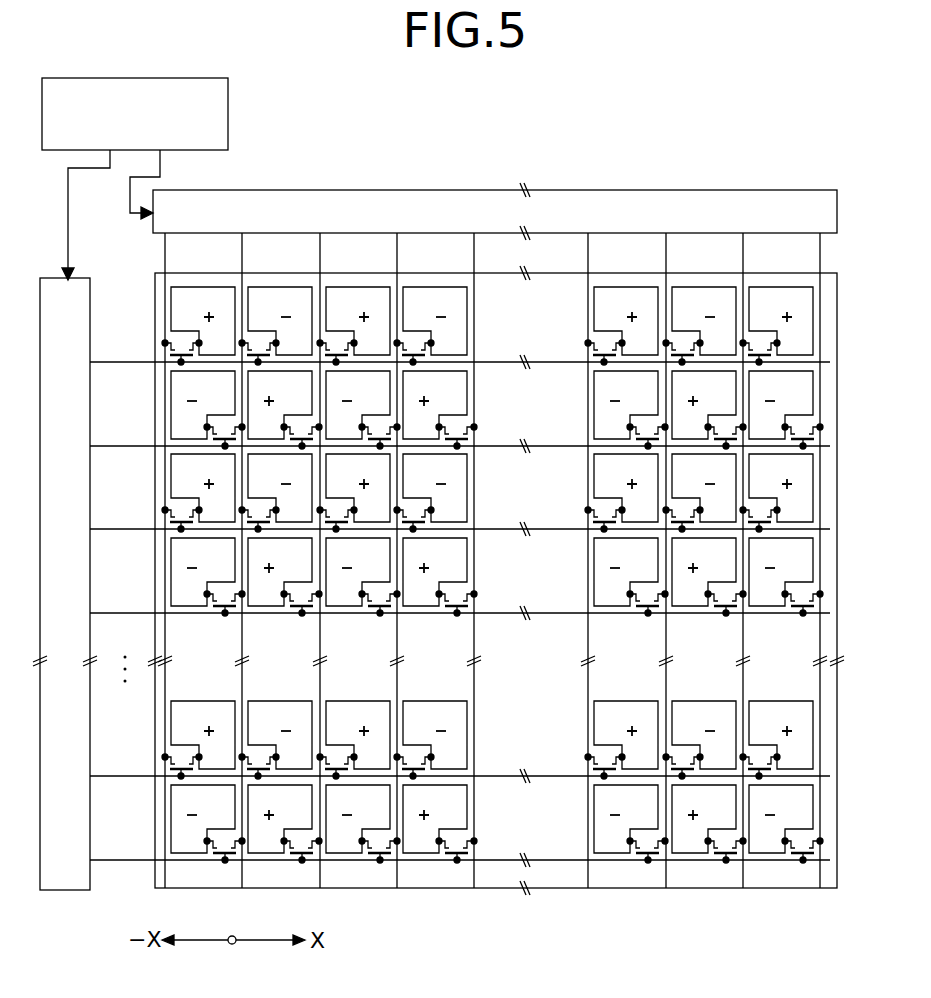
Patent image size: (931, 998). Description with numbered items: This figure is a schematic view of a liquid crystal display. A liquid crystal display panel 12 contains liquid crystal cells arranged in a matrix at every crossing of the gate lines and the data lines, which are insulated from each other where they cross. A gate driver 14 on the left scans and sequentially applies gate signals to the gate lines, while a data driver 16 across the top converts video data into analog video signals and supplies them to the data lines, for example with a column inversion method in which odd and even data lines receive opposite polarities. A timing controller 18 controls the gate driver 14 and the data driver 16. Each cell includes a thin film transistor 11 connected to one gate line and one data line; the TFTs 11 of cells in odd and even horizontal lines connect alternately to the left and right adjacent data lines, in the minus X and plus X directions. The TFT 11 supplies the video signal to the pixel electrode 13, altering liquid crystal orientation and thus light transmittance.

The thin film transistor 11 is at (160, 358).
The liquid crystal display panel 12 is at (838, 398).
The pixel electrode 13 is at (177, 330).
The gate driver 14 is at (80, 887).
The data driver 16 is at (577, 190).
The timing controller 18 is at (228, 93).